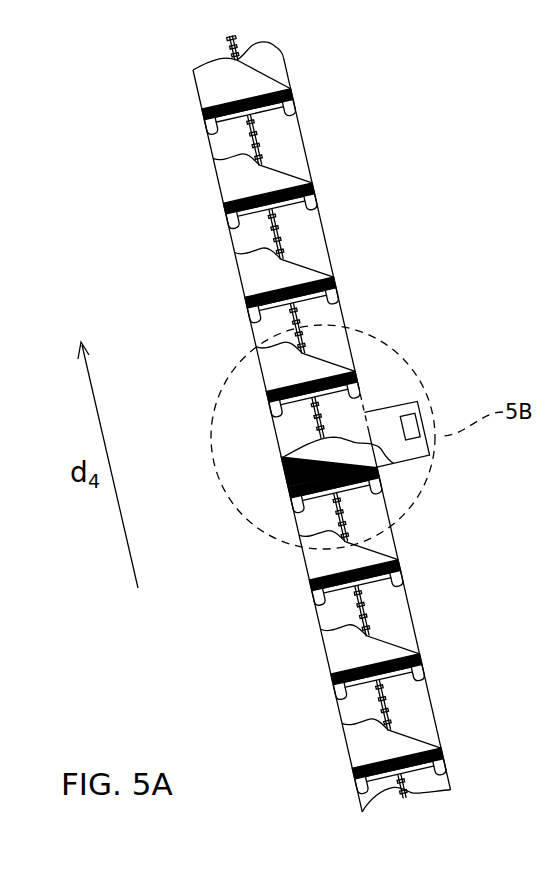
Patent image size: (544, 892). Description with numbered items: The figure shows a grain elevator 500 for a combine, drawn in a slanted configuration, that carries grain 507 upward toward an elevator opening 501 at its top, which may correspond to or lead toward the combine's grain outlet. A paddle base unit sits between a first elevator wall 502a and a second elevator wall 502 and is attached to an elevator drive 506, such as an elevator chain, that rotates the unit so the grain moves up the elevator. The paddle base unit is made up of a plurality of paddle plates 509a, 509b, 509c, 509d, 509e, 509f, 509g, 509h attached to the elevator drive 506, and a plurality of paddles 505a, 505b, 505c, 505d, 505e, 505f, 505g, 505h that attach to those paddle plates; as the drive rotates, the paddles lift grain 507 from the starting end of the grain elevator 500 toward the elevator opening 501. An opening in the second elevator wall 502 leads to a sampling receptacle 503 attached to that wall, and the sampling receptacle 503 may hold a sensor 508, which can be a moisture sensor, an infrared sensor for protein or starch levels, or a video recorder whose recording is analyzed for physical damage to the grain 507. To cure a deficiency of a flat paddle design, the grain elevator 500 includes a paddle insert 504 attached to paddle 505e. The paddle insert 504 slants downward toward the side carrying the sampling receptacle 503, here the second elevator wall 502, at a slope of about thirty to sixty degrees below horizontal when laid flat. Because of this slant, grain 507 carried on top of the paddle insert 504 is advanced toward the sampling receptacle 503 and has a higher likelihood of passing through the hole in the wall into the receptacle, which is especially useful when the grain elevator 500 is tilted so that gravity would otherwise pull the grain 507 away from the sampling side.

The grain elevator 500 is at (135, 68).
The elevator opening 501 is at (260, 46).
The tube wall 502 is at (304, 152).
The first elevator wall 502a is at (212, 153).
The sampling receptacle 503 is at (392, 425).
The paddle insert 504 is at (284, 470).
The paddle 505a is at (208, 130).
The paddle 505b is at (231, 226).
The paddle 505c is at (253, 320).
The paddle 505d is at (275, 412).
The paddle 505e is at (295, 505).
The paddle 505f is at (318, 604).
The paddle 505g is at (340, 697).
The paddle 505h is at (361, 792).
The elevator drive 506 is at (380, 490).
The grain 507 is at (349, 541).
The sensor 508 is at (420, 412).
The paddle plate 509a is at (293, 110).
The paddle plate 509b is at (315, 206).
The paddle plate 509c is at (336, 300).
The paddle plate 509d is at (357, 393).
The paddle plate 509e is at (380, 475).
The paddle plate 509f is at (400, 584).
The paddle plate 509g is at (422, 678).
The paddle plate 509h is at (444, 772).